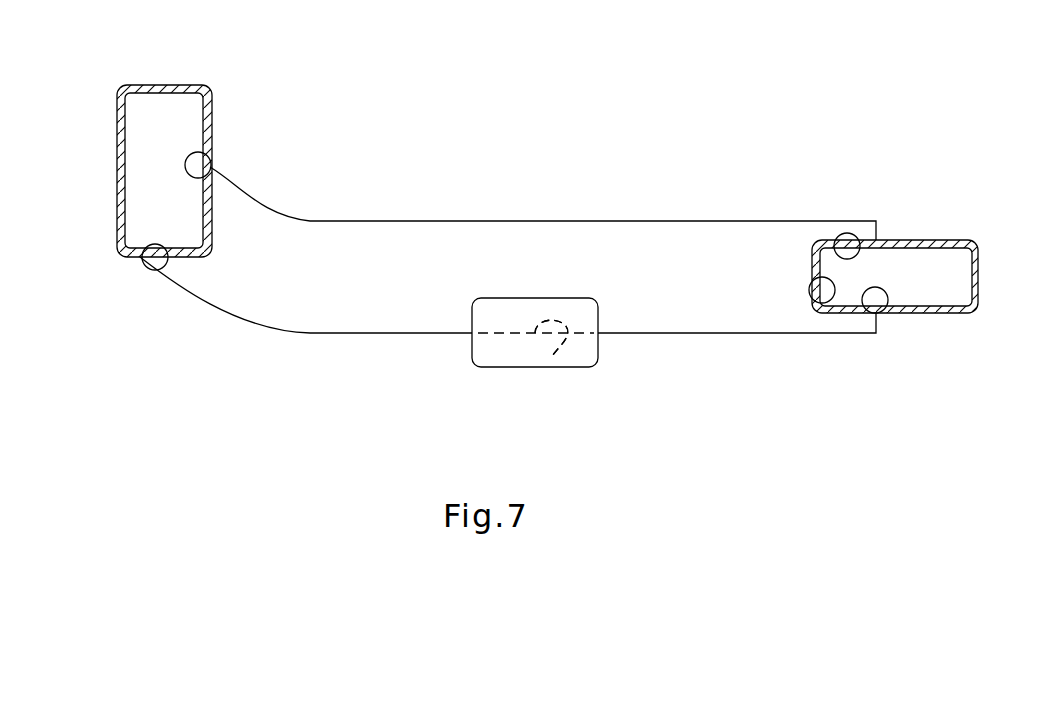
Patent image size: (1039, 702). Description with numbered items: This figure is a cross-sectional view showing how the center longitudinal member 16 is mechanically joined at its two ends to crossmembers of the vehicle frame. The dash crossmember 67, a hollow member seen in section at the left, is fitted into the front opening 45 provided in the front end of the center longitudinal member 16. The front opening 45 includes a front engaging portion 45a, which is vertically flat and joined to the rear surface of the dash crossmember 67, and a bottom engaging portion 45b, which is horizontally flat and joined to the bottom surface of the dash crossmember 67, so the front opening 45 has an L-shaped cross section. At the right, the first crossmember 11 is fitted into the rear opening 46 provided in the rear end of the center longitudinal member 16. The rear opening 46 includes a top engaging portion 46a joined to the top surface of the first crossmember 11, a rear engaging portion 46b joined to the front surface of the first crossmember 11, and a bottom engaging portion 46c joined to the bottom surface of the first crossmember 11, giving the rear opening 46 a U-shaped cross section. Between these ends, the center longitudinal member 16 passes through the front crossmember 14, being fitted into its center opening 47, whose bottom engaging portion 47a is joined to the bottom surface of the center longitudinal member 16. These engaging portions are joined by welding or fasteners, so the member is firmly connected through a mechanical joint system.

The first crossmember 11 is at (954, 240).
The front crossmember 14 is at (495, 367).
The center longitudinal member 16 is at (618, 221).
The front opening 45 is at (186, 200).
The front engaging portion 45a is at (205, 152).
The bottom engaging portion 45b is at (142, 258).
The rear opening 46 is at (836, 263).
The top engaging portion 46a is at (830, 250).
The rear engaging portion 46b is at (833, 307).
The bottom engaging portion 46c is at (888, 312).
The center opening 47 is at (551, 337).
The bottom engaging portion 47a is at (553, 355).
The dash crossmember 67 is at (117, 168).